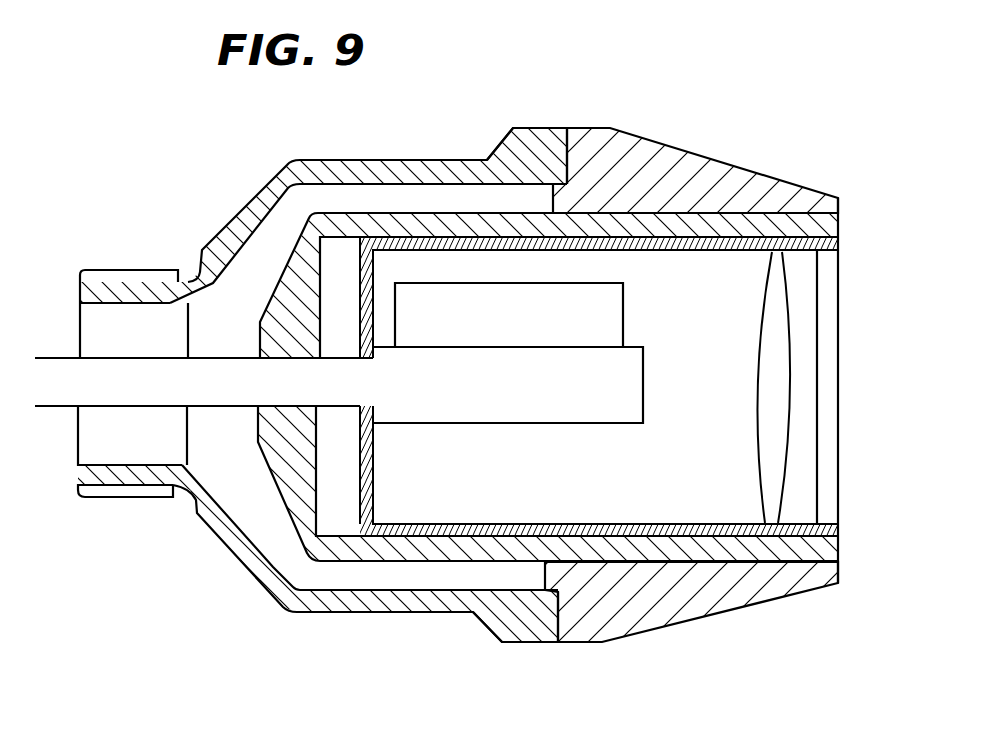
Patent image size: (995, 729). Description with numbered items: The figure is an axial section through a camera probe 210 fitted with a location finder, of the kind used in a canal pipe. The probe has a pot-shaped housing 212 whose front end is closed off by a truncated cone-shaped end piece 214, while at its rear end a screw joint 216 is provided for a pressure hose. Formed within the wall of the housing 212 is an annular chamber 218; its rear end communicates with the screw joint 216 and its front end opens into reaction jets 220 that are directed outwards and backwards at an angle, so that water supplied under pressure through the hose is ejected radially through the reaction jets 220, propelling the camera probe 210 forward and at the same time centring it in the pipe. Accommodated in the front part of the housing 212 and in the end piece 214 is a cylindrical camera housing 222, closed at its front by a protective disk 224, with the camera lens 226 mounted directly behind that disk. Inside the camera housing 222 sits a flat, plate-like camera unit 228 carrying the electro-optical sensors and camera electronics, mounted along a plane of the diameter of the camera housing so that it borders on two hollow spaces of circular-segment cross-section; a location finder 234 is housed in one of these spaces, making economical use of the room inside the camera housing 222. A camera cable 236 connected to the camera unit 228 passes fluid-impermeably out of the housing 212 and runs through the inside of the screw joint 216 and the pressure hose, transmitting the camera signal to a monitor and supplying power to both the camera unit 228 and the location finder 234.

The camera probe 210 is at (632, 92).
The housing 212 is at (260, 186).
The end piece 214 is at (717, 163).
The screw joint 216 is at (122, 270).
The annular chamber 218 is at (354, 200).
The reaction jets 220 is at (503, 162).
The camera housing 222 is at (670, 540).
The protective disk 224 is at (835, 493).
The camera lens 226 is at (752, 420).
The camera unit 228 is at (488, 417).
The location finder 234 is at (610, 307).
The camera cable 236 is at (97, 407).